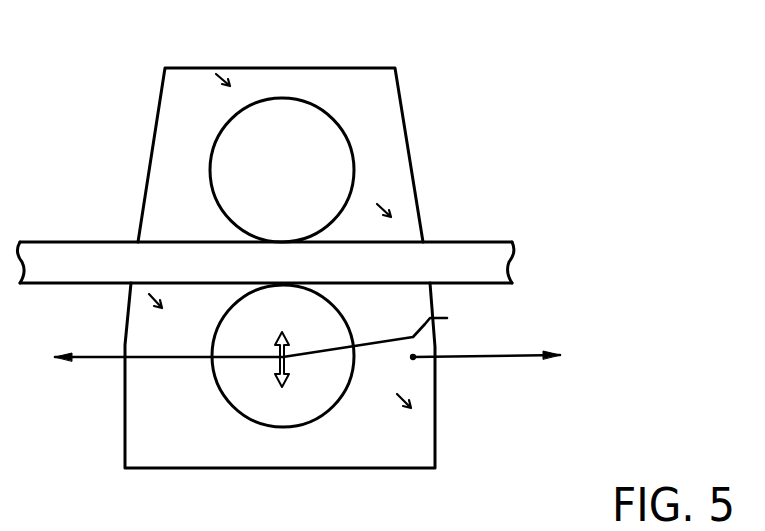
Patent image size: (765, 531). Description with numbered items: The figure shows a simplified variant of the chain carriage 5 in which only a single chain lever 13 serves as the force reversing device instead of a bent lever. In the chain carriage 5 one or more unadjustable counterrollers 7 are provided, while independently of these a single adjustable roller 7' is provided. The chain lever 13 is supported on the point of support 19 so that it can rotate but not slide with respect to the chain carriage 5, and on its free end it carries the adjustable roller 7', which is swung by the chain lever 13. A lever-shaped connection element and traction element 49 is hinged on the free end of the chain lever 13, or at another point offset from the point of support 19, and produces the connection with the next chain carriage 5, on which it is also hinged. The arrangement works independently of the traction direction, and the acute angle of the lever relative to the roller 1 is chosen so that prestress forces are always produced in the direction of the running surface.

The roller 1 is at (444, 250).
The chain carriage 5 is at (338, 67).
The unadjustable counterroller 7 is at (293, 168).
The adjustable roller 7' is at (276, 372).
The chain lever 13 is at (380, 334).
The point of support 19 is at (270, 327).
The connection element and traction element 49 is at (95, 362).